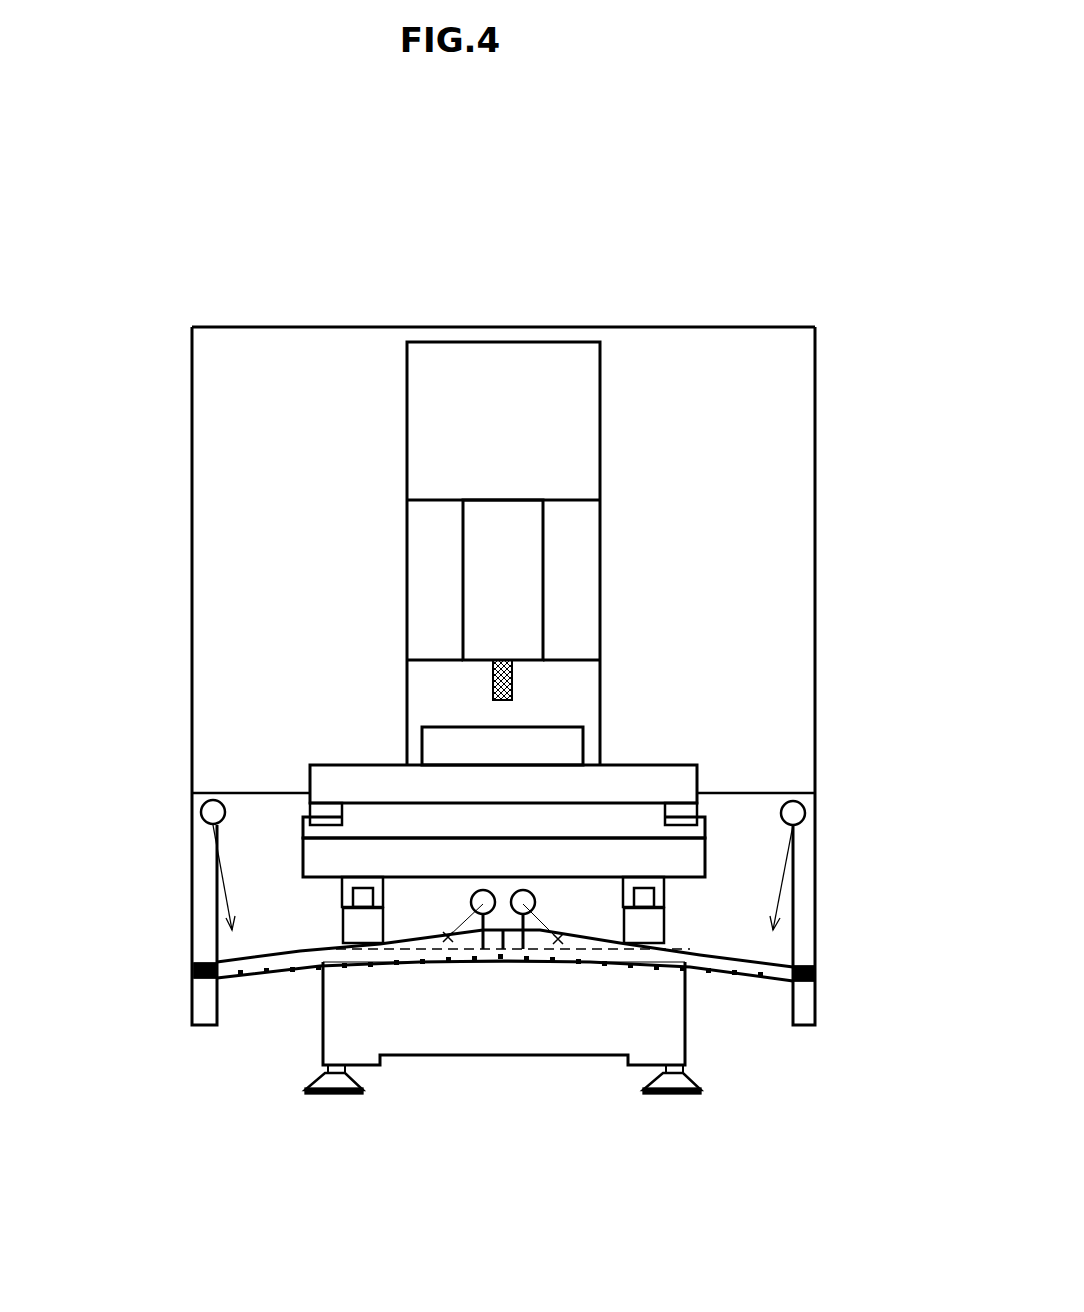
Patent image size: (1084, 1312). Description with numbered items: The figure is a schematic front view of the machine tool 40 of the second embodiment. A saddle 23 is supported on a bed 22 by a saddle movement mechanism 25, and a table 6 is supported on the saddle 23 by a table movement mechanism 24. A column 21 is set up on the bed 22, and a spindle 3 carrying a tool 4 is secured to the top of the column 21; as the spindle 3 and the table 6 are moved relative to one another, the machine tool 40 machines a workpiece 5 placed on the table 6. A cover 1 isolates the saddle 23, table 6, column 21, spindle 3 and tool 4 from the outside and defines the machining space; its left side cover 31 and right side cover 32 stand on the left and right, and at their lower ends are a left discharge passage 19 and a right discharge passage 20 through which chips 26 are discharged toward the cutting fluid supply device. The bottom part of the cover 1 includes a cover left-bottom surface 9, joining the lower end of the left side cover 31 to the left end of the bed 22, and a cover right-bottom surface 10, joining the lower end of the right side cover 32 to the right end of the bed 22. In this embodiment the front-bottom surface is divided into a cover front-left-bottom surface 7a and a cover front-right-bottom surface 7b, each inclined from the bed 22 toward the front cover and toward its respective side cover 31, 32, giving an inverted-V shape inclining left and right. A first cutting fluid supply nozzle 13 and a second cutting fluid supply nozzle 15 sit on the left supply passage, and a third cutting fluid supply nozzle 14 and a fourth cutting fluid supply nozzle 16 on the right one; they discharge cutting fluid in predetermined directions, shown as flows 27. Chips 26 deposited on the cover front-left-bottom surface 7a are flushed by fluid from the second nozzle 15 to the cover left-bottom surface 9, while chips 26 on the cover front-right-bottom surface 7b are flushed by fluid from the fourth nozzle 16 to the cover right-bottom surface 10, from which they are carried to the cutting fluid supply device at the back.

The machine tool 40 is at (345, 129).
The cover 1 is at (375, 327).
The left side cover 31 is at (192, 390).
The right side cover 32 is at (815, 392).
The column 21 is at (586, 548).
The spindle 3 is at (523, 545).
The tool 4 is at (494, 678).
The workpiece 5 is at (547, 742).
The table 6 is at (637, 773).
The table movement mechanism 24 is at (680, 817).
The saddle 23 is at (553, 853).
The saddle movement mechanism 25 is at (663, 907).
The left discharge passage 19 is at (214, 1025).
The right discharge passage 20 is at (815, 1028).
The first cutting fluid supply nozzle 13 is at (203, 806).
The third cutting fluid supply nozzle 14 is at (803, 806).
The cover right-bottom surface 10 is at (690, 952).
The cover front-left-bottom surface 7a is at (407, 939).
The cover front-right-bottom surface 7b is at (597, 938).
The chips 26 is at (577, 965).
The cover left-bottom surface 9 is at (325, 955).
The second cutting fluid supply nozzle 15 is at (482, 915).
The fourth cutting fluid supply nozzle 16 is at (517, 915).
The flows of the cutting fluid 27 is at (217, 898).
The bed 22 is at (560, 1055).